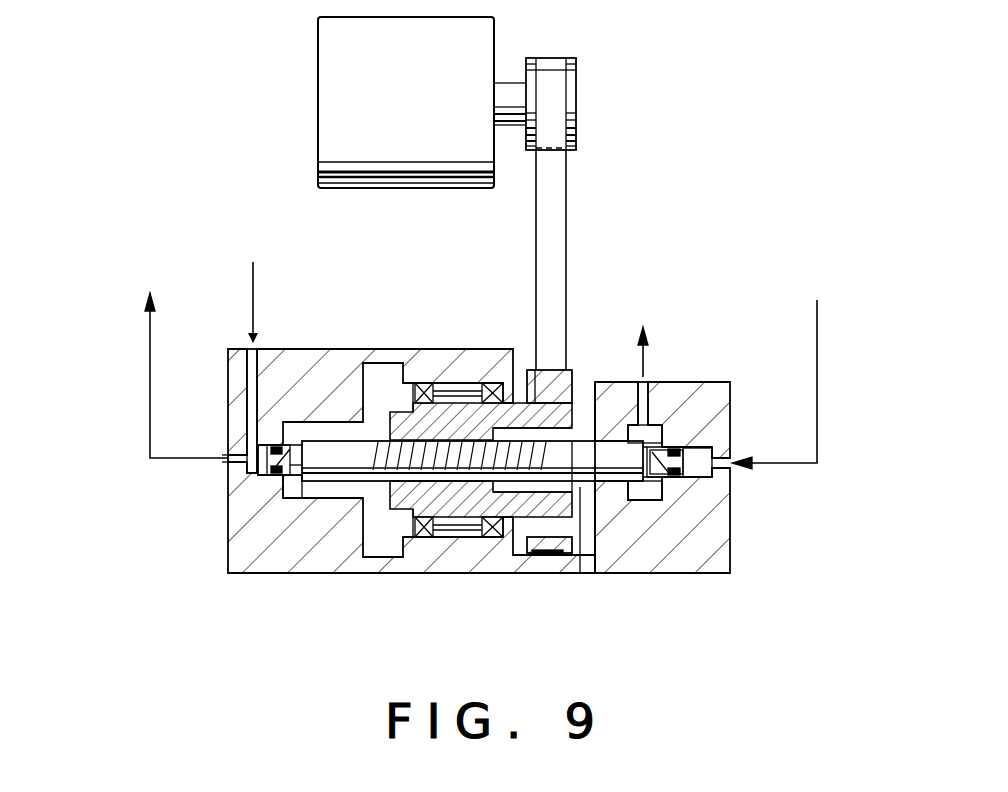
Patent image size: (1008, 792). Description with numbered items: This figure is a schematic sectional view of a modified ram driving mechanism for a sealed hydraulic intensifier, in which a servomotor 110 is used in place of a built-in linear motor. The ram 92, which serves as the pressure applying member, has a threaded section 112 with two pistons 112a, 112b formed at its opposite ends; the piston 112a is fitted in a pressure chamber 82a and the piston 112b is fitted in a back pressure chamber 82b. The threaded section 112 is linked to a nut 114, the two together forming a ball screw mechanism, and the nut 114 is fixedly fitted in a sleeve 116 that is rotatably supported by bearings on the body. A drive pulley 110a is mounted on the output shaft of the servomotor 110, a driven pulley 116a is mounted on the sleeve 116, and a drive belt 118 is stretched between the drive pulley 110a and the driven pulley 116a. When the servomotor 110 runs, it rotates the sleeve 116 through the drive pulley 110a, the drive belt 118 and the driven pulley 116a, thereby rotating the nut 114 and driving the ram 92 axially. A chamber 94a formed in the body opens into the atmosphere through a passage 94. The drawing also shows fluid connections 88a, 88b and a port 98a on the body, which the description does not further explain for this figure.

The servomotor 110 is at (328, 107).
The drive pulley 110a is at (577, 108).
The drive belt 118 is at (552, 218).
The driven pulley 116a is at (567, 380).
The sleeve 116 is at (452, 412).
The nut 114 is at (386, 410).
The inlet port 98a is at (253, 378).
The fluid line 88a is at (150, 373).
The fluid line 88b is at (820, 379).
The passage 94 is at (645, 406).
The chamber 94a is at (638, 490).
The pressure chamber 82a is at (250, 473).
The back pressure chamber 82b is at (698, 470).
The piston 112a is at (285, 490).
The threaded section 112 is at (580, 487).
The piston 112b is at (705, 477).
The ram 92 is at (325, 497).